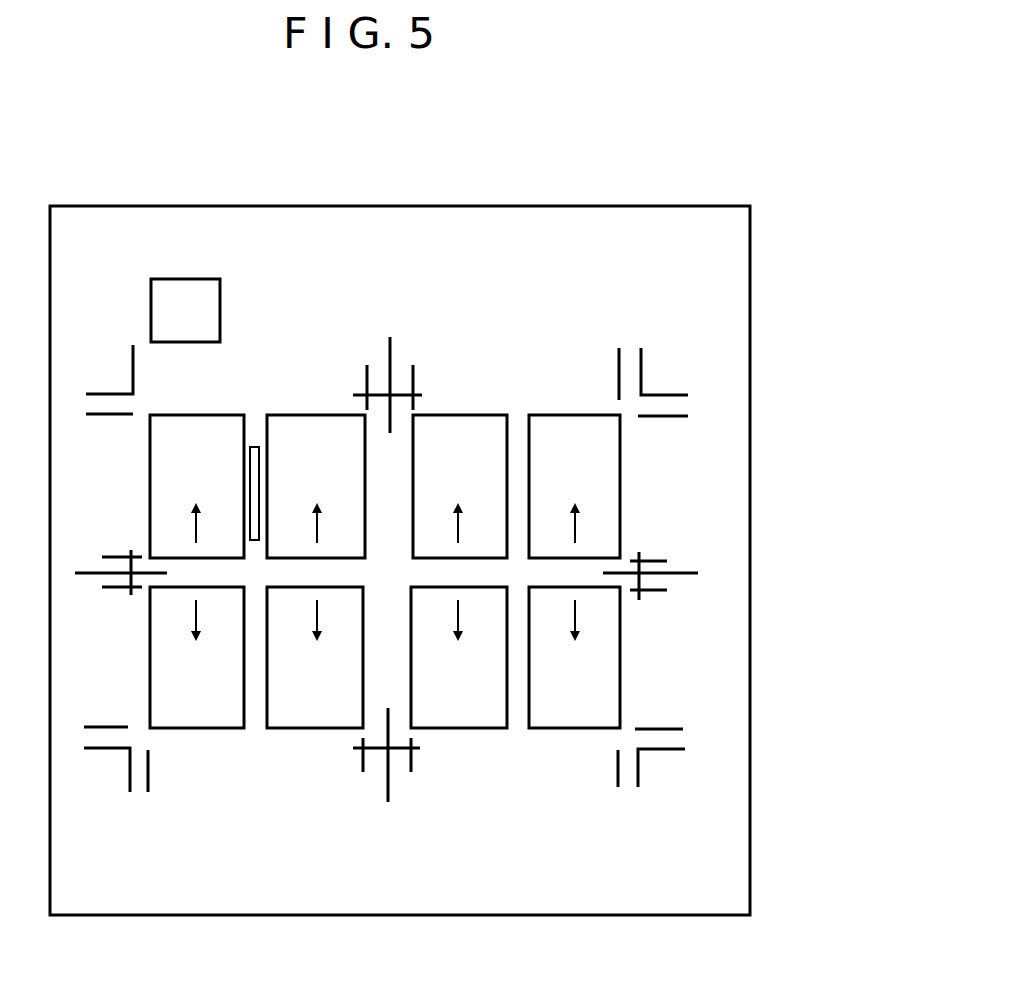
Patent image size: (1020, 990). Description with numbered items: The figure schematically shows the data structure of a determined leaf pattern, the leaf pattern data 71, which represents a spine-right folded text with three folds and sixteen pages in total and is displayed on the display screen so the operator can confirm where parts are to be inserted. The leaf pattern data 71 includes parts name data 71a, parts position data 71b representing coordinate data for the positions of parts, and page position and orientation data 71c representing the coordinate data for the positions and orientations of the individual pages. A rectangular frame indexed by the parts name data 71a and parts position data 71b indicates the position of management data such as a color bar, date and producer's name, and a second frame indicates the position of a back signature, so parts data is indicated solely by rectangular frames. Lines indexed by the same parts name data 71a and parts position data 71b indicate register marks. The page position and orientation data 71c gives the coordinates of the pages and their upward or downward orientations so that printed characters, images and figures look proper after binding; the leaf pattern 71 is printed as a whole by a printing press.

The leaf pattern data 71 is at (545, 207).
The parts name data 71a is at (497, 452).
The parts position data 71b is at (189, 276).
The page position and orientation data 71c is at (150, 470).